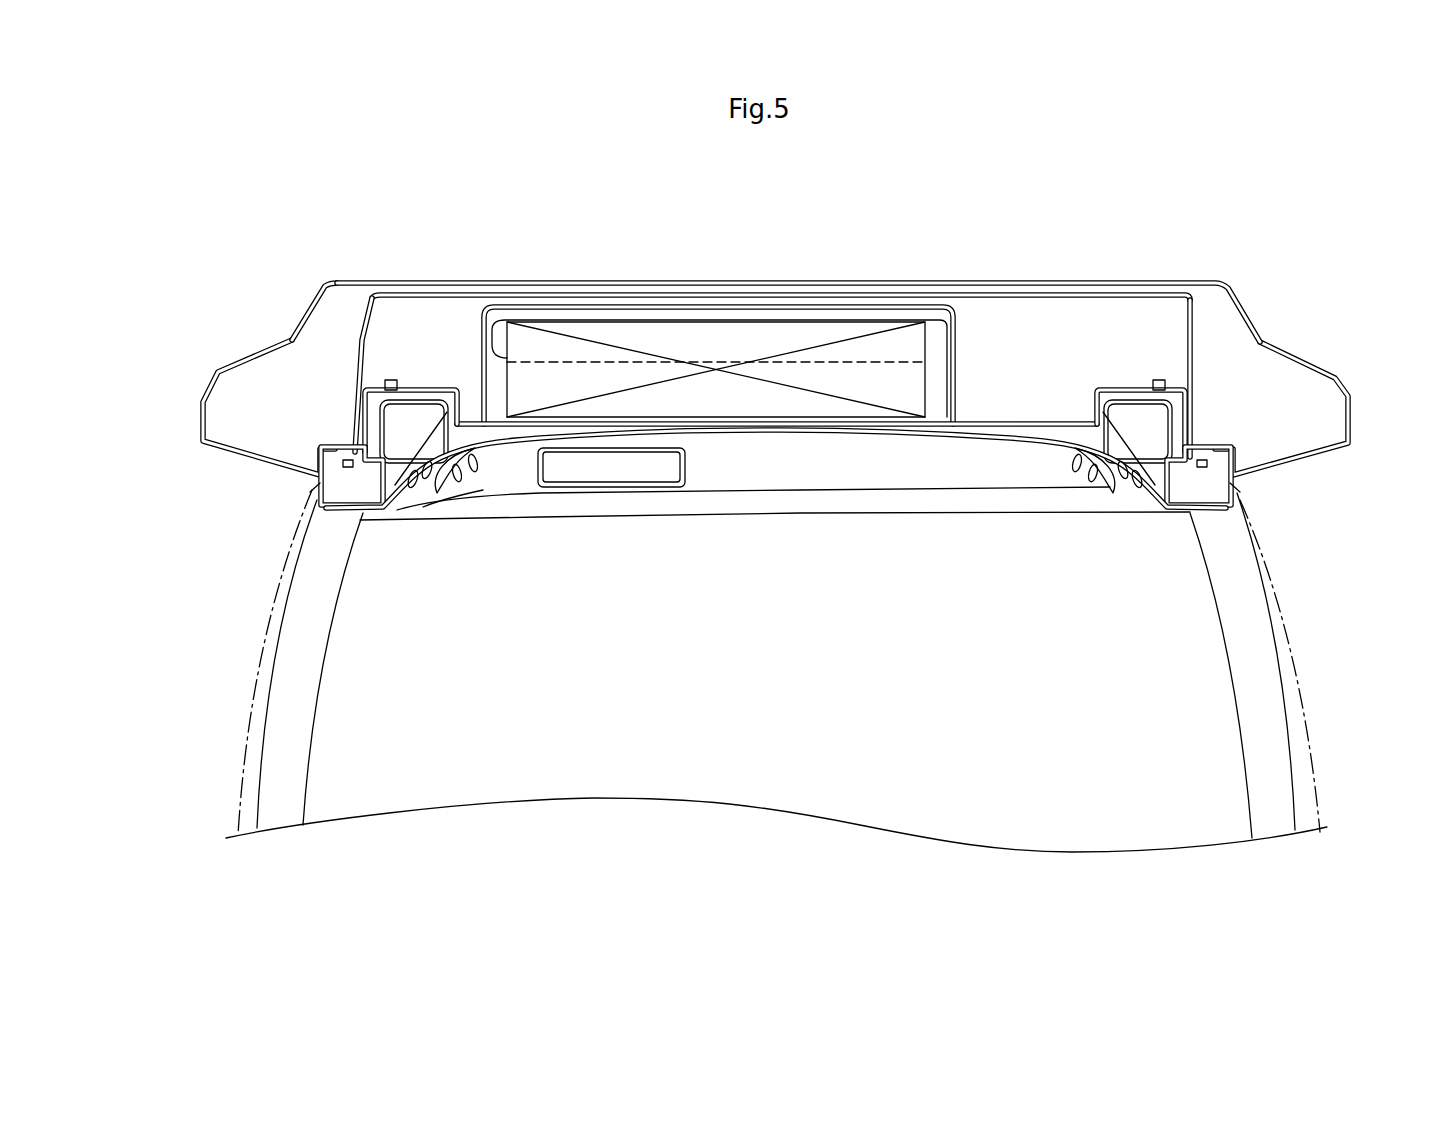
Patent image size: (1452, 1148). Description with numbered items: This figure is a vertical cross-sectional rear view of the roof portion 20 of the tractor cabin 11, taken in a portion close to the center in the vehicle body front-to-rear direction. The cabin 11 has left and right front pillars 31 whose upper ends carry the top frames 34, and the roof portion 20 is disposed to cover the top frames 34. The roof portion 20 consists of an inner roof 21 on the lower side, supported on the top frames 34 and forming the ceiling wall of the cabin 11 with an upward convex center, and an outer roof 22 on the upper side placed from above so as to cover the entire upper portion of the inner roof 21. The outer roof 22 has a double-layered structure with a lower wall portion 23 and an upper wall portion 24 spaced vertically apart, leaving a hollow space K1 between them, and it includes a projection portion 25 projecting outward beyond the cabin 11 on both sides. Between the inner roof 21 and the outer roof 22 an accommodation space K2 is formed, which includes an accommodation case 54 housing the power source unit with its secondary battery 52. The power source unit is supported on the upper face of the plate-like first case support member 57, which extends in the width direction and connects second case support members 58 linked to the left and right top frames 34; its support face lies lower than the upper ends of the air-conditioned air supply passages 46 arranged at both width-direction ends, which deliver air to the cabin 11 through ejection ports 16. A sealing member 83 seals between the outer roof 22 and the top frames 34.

The cabin 11 is at (813, 667).
The ejection ports 16 is at (457, 487).
The roof portion 20 is at (777, 346).
The inner roof 21 is at (760, 435).
The outer roof 22 is at (307, 315).
The lower wall portion 23 is at (778, 376).
The upper wall portion 24 is at (1040, 285).
The projection portion 25 is at (222, 452).
The front pillars 31 is at (303, 628).
The top frames 34 is at (313, 490).
The air-conditioned air supply passages 46 is at (427, 402).
The secondary battery 52 is at (716, 315).
The accommodation case 54 is at (903, 307).
The first case support member 57 is at (985, 428).
The second case support members 58 is at (362, 410).
The sealing member 83 is at (320, 452).
The hollow space K1 is at (344, 325).
The accommodation space K2 is at (992, 331).